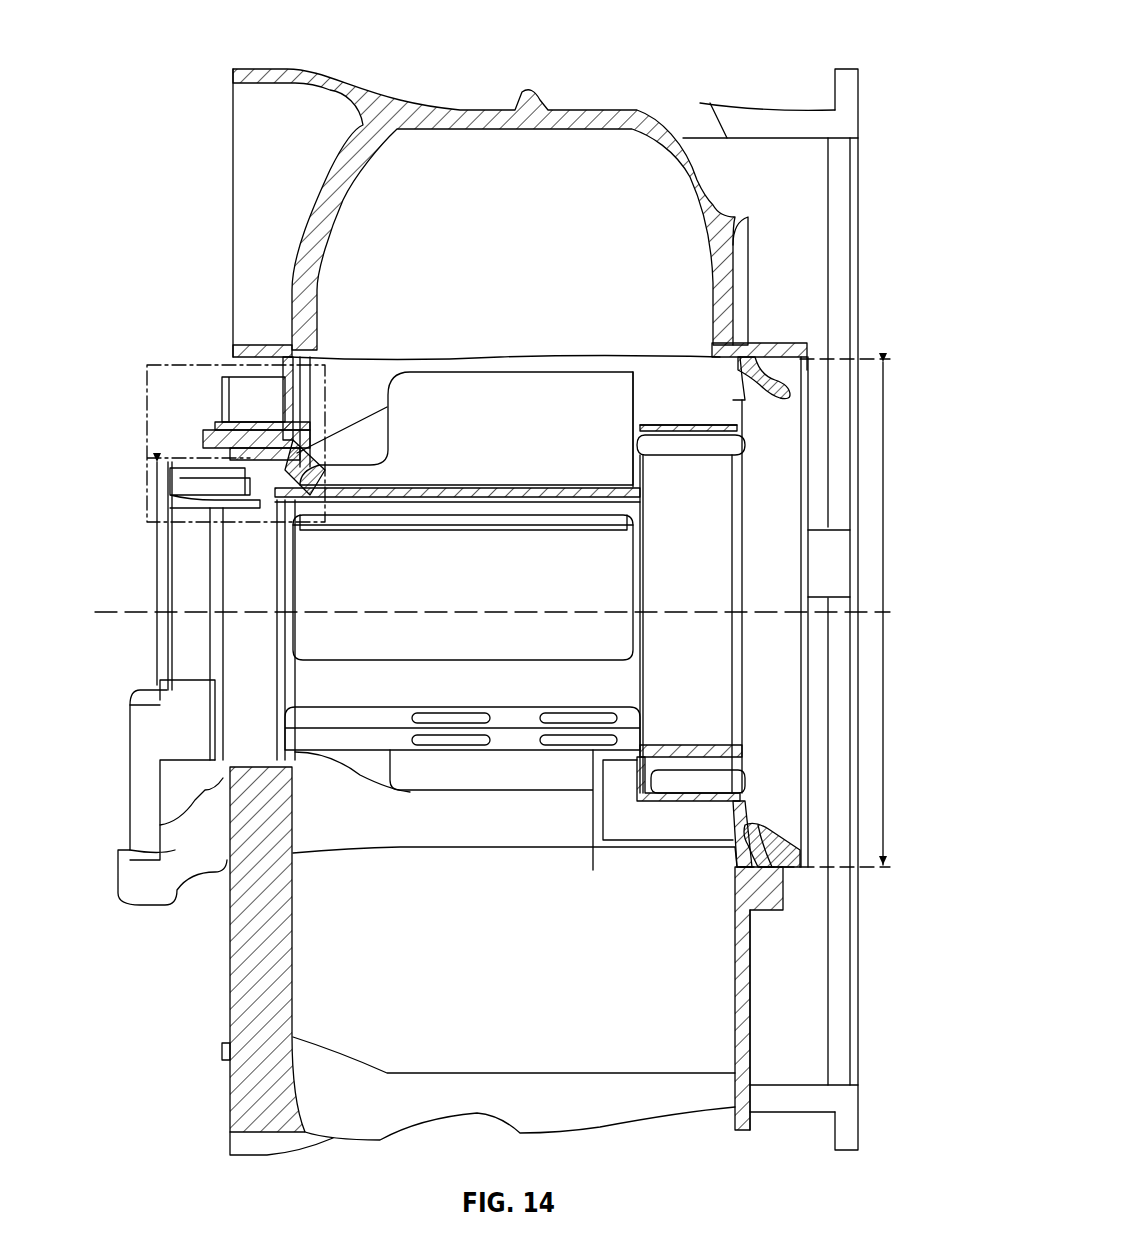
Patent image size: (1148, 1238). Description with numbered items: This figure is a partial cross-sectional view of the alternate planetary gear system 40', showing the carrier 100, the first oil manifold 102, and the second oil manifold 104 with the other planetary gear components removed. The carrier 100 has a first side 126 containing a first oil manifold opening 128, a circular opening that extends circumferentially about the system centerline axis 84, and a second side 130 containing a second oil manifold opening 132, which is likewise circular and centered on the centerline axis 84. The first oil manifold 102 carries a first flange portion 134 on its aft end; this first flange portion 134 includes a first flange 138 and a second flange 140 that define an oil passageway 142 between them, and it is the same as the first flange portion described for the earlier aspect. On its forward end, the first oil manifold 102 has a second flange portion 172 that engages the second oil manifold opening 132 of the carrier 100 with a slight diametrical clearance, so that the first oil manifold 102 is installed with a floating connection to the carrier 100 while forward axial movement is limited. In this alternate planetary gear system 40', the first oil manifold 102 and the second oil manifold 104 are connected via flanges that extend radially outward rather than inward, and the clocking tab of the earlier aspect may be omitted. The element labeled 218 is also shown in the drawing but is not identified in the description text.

The alternate planetary gear system 40' is at (770, 584).
The system centerline axis 84 is at (890, 612).
The carrier 100 is at (697, 200).
The first oil manifold 102 is at (797, 443).
The second oil manifold 104 is at (152, 533).
The first side 126 is at (778, 335).
The first oil manifold opening 128 is at (885, 478).
The second side 130 is at (263, 330).
The second oil manifold opening 132 is at (153, 563).
The first flange portion 134 is at (797, 755).
The first flange 138 is at (800, 870).
The second flange 140 is at (735, 893).
The oil passageway 142 is at (775, 880).
The second flange portion 172 is at (300, 755).
The sensor assembly 218 is at (185, 362).